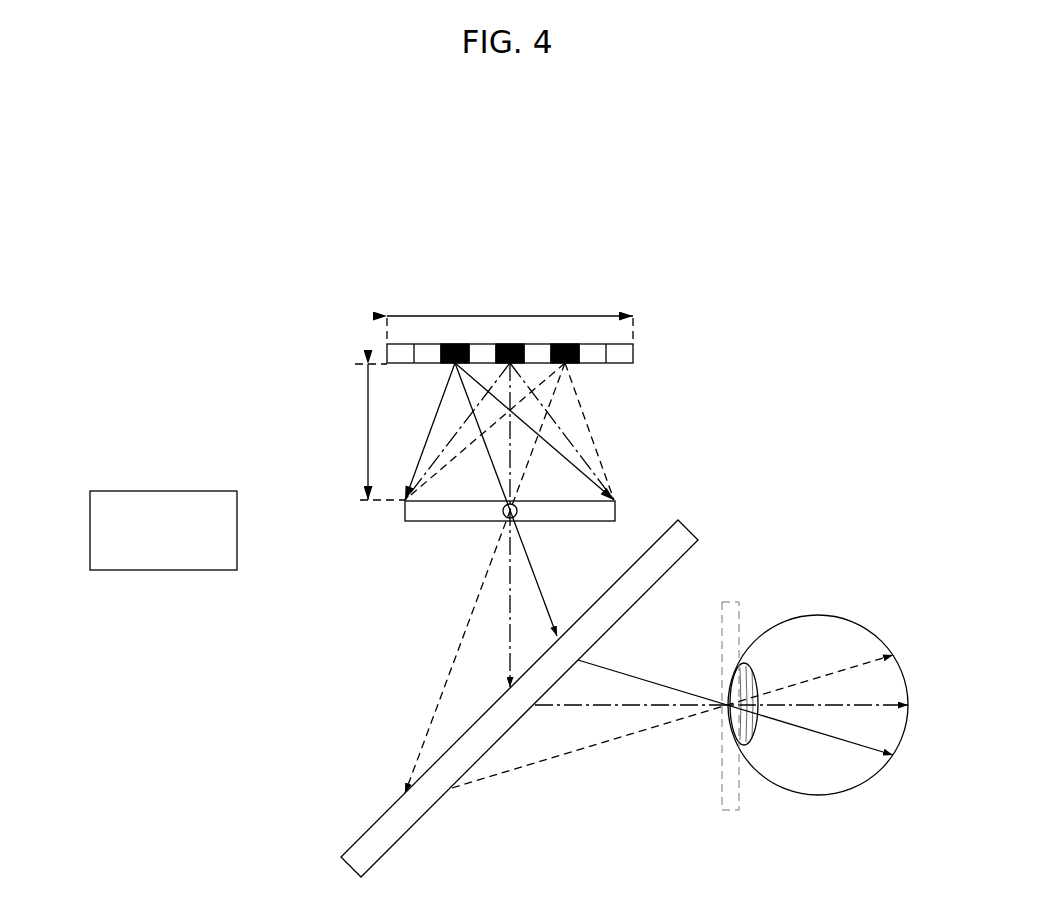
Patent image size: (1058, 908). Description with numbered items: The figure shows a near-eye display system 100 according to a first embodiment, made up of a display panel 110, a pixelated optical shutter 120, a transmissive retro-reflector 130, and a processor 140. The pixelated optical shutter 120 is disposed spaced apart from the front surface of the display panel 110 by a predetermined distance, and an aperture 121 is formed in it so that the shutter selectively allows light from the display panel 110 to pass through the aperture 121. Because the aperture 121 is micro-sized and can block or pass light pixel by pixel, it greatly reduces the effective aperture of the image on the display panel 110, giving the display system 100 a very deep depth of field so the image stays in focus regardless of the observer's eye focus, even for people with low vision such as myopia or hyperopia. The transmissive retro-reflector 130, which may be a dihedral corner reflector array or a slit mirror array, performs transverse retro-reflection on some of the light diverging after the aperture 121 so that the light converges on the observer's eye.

The near-eye display system 100 is at (401, 179).
The display panel 110 is at (633, 354).
The pixelated optical shutter 120 is at (615, 505).
The aperture 121 is at (497, 514).
The transmissive retro-reflector 130 is at (692, 534).
The processor 140 is at (163, 491).